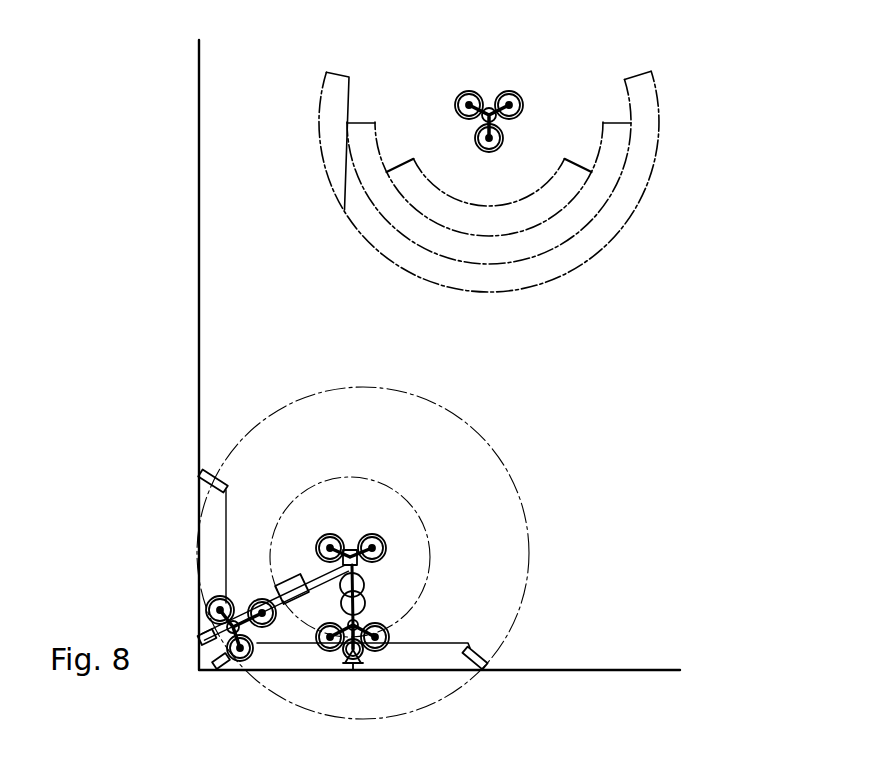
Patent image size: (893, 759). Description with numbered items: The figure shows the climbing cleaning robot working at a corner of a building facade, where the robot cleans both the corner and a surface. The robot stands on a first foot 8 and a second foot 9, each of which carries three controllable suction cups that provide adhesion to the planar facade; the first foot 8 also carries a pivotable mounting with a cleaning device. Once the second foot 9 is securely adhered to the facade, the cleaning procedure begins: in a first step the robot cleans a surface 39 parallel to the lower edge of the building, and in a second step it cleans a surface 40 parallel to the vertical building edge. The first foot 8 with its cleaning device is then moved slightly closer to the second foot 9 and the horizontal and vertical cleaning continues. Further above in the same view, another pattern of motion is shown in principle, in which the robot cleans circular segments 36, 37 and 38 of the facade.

The first foot 8 is at (192, 617).
The second foot 9 is at (492, 87).
The circular segment 36 is at (513, 220).
The circular segment 37 is at (587, 200).
The circular segment 38 is at (650, 138).
The surface parallel to the lower edge of the building 39 is at (420, 652).
The surface parallel to the vertical building edge 40 is at (208, 565).